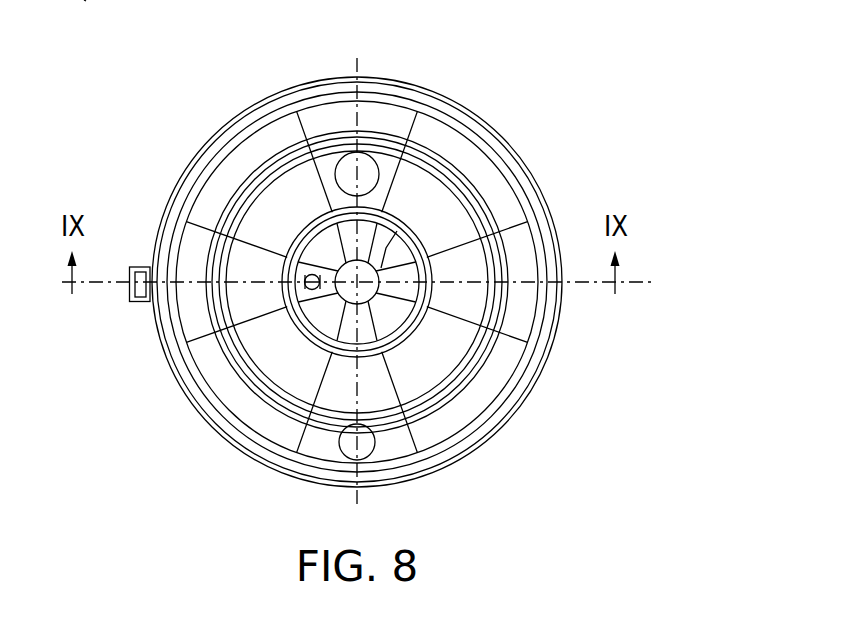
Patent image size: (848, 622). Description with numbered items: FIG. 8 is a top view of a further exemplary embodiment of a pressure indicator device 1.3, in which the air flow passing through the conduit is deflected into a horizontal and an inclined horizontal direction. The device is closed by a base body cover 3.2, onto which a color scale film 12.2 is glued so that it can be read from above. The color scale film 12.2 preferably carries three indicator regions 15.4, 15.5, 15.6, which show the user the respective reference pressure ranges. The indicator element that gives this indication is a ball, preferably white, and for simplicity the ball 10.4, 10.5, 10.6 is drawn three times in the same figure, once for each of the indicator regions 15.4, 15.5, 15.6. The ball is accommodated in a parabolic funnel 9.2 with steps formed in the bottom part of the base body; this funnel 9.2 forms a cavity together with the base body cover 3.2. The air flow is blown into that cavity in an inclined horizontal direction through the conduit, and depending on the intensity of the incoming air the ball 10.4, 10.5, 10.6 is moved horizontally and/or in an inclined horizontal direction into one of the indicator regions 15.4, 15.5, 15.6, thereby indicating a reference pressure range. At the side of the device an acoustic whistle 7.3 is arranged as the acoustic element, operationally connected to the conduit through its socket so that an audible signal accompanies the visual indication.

The pressure indicator device 1.3 is at (142, 441).
The base body cover 3.2 is at (85, 0).
The acoustic whistle 7.3 is at (140, 273).
The parabolic funnel 9.2 is at (240, 305).
The ball 10.4 is at (343, 268).
The ball 10.5 is at (342, 168).
The ball 10.6 is at (343, 447).
The color scale film 12.2 is at (401, 120).
The indicator region 15.4 is at (385, 250).
The indicator region 15.5 is at (440, 350).
The indicator region 15.6 is at (445, 418).